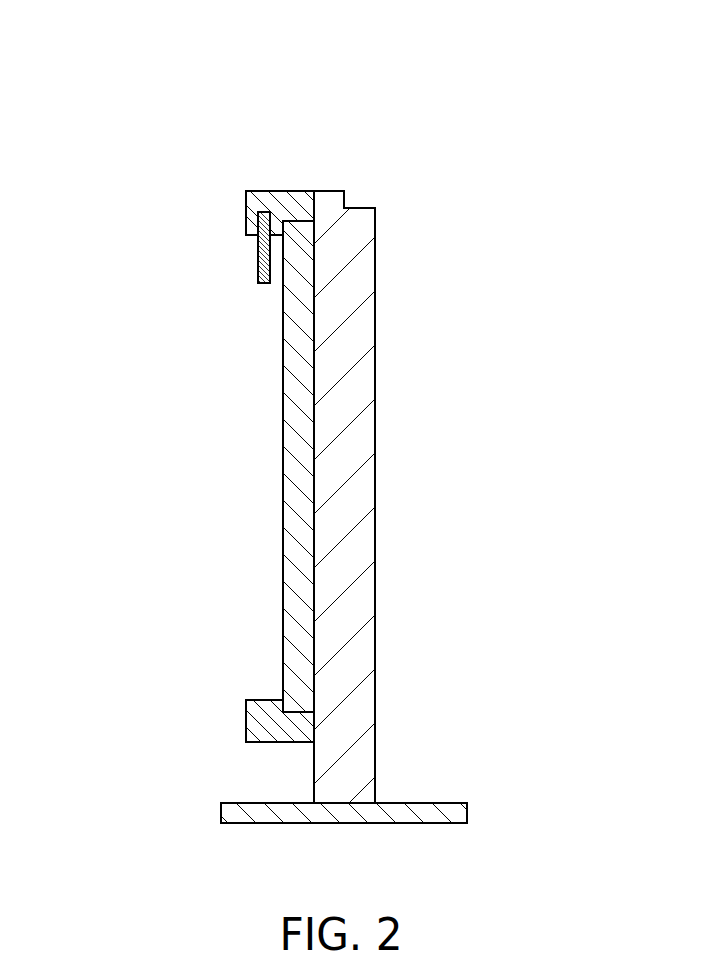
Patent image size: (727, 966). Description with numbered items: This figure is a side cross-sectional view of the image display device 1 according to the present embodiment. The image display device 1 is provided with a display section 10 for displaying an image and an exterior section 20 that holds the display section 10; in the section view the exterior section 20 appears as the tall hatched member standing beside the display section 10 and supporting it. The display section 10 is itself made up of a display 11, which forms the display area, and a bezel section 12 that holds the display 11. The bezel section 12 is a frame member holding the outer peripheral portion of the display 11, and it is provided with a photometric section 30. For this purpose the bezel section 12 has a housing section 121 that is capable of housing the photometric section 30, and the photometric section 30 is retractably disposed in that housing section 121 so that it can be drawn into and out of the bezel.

The image display device 1 is at (282, 454).
The display section 10 is at (202, 393).
The display 11 is at (290, 552).
The bezel section 12 is at (202, 174).
The housing section 121 is at (247, 225).
The exterior section 20 is at (350, 443).
The photometric section 30 is at (257, 253).